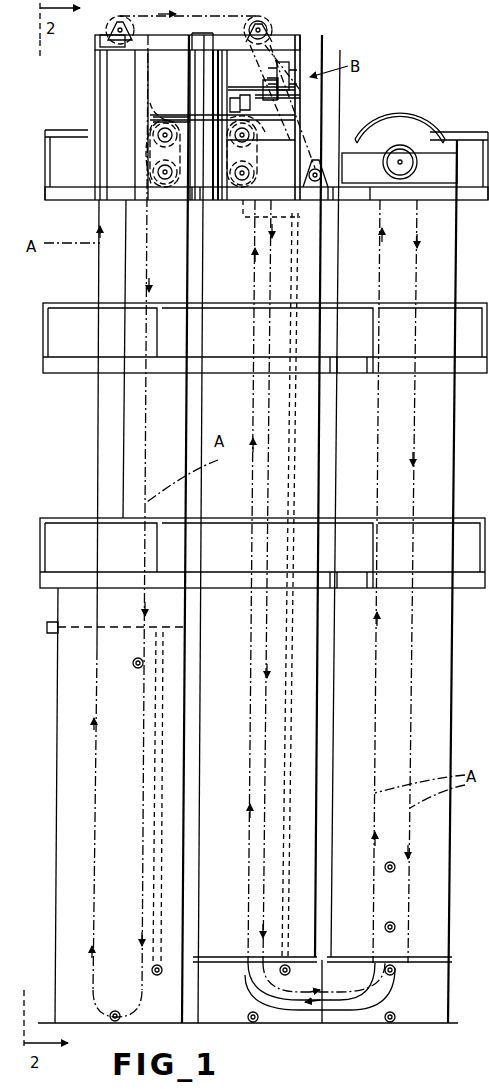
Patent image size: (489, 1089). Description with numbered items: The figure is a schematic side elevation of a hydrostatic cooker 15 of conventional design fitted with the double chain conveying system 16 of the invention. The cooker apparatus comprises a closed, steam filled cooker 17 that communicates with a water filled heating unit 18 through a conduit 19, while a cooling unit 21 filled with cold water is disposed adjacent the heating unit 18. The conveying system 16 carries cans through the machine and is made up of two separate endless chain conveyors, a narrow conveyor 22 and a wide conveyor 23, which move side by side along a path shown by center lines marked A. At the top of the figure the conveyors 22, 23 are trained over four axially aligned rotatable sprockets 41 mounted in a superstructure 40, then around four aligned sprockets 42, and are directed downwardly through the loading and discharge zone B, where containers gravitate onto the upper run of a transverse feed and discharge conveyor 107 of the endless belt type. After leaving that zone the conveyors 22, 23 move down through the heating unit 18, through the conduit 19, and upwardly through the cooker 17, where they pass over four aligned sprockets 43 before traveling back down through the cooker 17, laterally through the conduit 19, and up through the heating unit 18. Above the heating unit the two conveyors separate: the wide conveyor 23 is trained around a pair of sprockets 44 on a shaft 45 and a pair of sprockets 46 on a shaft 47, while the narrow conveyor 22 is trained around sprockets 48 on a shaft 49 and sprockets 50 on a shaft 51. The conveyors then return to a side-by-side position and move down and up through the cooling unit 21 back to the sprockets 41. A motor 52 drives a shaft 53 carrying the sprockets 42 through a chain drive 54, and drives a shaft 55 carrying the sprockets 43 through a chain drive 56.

The hydrostatic cooker 15 is at (382, 76).
The double chain conveying system 16 is at (96, 477).
The cooker 17 is at (459, 446).
The heating unit 18 is at (322, 450).
The conduit 19 is at (360, 1024).
The cooling unit 21 is at (57, 782).
The narrow conveyor 22 is at (247, 76).
The wide conveyor 23 is at (160, 142).
The superstructure 40 is at (93, 43).
The sprockets 41 is at (124, 46).
The sprockets 42 is at (248, 22).
The sprockets 43 is at (420, 127).
The sprockets 44 is at (248, 220).
The shaft 45 is at (240, 185).
The sprockets 46 is at (156, 185).
The shaft 47 is at (170, 180).
The sprockets 48 is at (255, 127).
The shaft 49 is at (258, 140).
The sprockets 50 is at (163, 106).
The shaft 51 is at (158, 130).
The motor 52 is at (318, 183).
The shaft 53 is at (266, 28).
The chain drive 54 is at (292, 68).
The shaft 55 is at (403, 162).
The chain drive 56 is at (340, 153).
The transverse feed and discharge conveyor 107 is at (292, 94).